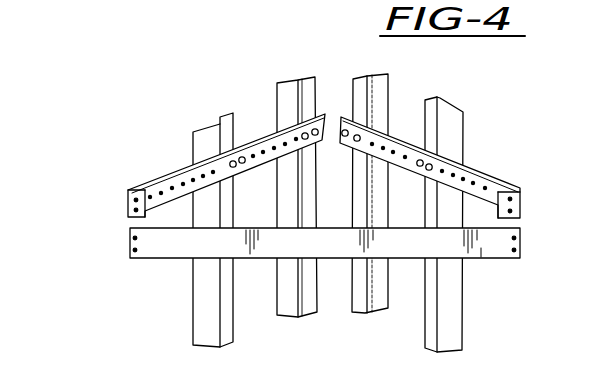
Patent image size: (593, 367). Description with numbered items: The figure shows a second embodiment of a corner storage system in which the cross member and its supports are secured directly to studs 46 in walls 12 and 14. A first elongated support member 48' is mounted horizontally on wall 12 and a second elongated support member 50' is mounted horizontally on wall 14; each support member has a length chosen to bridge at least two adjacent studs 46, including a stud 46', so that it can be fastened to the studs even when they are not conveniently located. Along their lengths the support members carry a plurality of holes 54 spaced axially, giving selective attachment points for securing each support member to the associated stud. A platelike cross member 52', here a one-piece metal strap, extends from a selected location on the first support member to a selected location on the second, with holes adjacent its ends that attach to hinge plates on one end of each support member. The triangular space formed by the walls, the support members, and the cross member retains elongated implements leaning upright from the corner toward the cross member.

The wall 12 is at (252, 100).
The wall 14 is at (467, 80).
The studs 46 is at (330, 211).
The stud 46' is at (75, 10).
The first elongated support member 48' is at (182, 182).
The second elongated support member 50' is at (456, 159).
The cross member 52' is at (317, 294).
The holes 54 is at (419, 162).